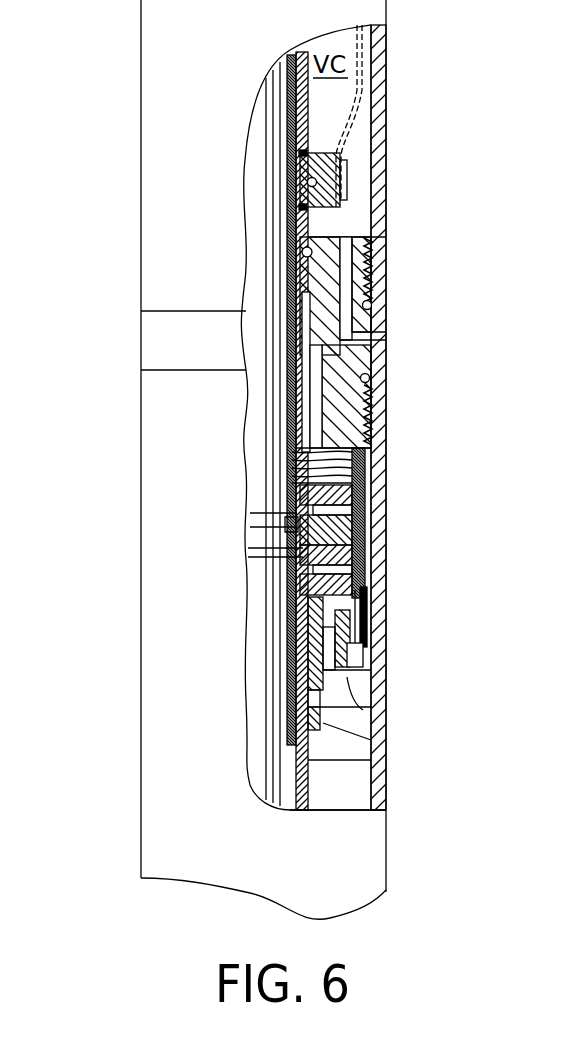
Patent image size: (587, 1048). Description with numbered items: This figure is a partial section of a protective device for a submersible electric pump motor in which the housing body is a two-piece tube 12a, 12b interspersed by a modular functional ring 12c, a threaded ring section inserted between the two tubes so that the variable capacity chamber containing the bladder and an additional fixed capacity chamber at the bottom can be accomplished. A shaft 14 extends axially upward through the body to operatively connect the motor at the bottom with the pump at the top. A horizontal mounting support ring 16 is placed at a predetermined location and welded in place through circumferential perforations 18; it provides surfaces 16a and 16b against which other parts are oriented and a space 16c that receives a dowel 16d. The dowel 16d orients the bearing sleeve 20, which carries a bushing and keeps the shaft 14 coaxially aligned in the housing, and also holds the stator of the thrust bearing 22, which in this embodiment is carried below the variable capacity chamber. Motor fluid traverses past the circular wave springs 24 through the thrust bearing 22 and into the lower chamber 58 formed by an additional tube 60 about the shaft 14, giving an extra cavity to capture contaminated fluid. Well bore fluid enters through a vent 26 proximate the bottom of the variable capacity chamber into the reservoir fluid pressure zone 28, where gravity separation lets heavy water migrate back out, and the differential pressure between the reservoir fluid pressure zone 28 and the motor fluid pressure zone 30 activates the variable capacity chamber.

The tube 12a is at (141, 174).
The tube 12b is at (141, 518).
The modular functional ring 12c is at (141, 352).
The shaft 14 is at (282, 431).
The horizontal mounting support ring 16 is at (372, 652).
The surface 16a is at (358, 615).
The surface 16b is at (371, 718).
The space 16c is at (385, 698).
The dowel 16d is at (367, 605).
The circumferential perforations 18 is at (372, 660).
The bearing sleeve 20 is at (365, 752).
The thrust bearing 22 is at (375, 523).
The circular wave springs 24 is at (385, 460).
The vent 26 is at (378, 345).
The reservoir fluid pressure zone 28 is at (342, 221).
The motor fluid pressure zone 30 is at (327, 102).
The lower chamber 58 is at (371, 812).
The tube 60 is at (337, 796).